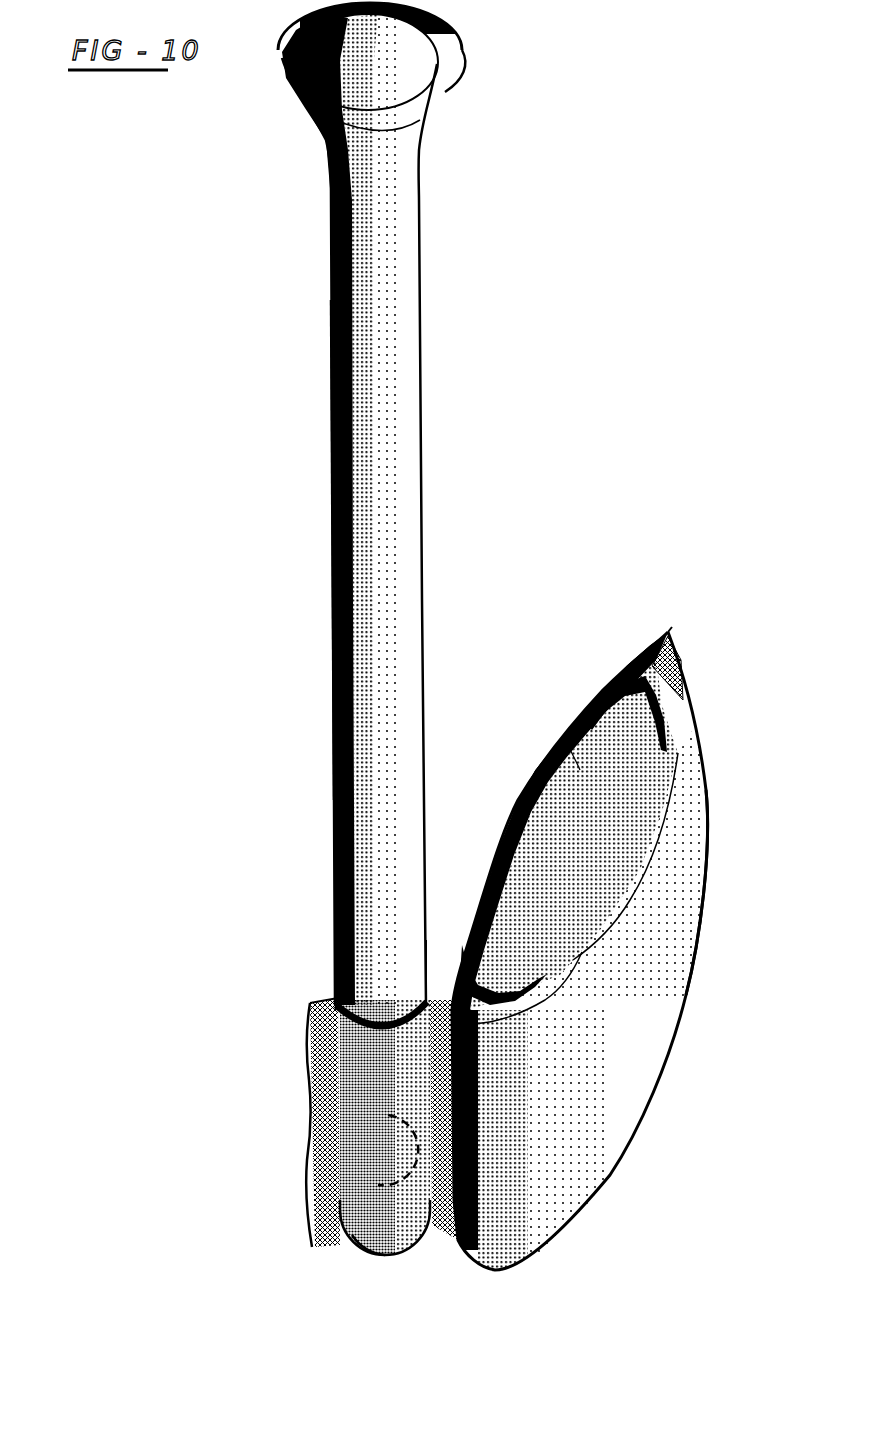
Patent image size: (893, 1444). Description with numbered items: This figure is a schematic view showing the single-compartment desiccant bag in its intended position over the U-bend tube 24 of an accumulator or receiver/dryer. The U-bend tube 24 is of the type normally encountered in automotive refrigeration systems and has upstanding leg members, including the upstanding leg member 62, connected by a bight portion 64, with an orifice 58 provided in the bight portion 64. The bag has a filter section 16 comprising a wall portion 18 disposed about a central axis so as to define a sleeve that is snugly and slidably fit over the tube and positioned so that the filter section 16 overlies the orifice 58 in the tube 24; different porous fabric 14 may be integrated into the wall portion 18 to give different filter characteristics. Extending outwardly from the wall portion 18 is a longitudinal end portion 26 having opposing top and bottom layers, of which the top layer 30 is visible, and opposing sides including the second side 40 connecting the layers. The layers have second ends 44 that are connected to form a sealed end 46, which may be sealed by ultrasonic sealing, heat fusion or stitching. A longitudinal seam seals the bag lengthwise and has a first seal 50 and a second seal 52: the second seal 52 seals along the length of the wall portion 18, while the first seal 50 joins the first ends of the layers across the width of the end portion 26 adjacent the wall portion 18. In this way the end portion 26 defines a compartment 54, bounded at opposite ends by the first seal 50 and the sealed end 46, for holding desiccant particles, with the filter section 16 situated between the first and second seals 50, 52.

The porous fabric 14 is at (650, 1053).
The filter section 16 is at (393, 1258).
The wall portion 18 is at (367, 1258).
The U-bend tube 24 is at (442, 254).
The longitudinal end portion 26 is at (722, 804).
The top layer 30 is at (680, 942).
The second side 40 is at (554, 750).
The second end 44 is at (624, 660).
The sealed end 46 is at (669, 632).
The first seal 50 is at (437, 1236).
The second seal 52 is at (312, 1223).
The compartment 54 is at (614, 1119).
The orifice 58 is at (310, 1120).
The upstanding leg member 62 is at (326, 500).
The bight portion 64 is at (432, 940).